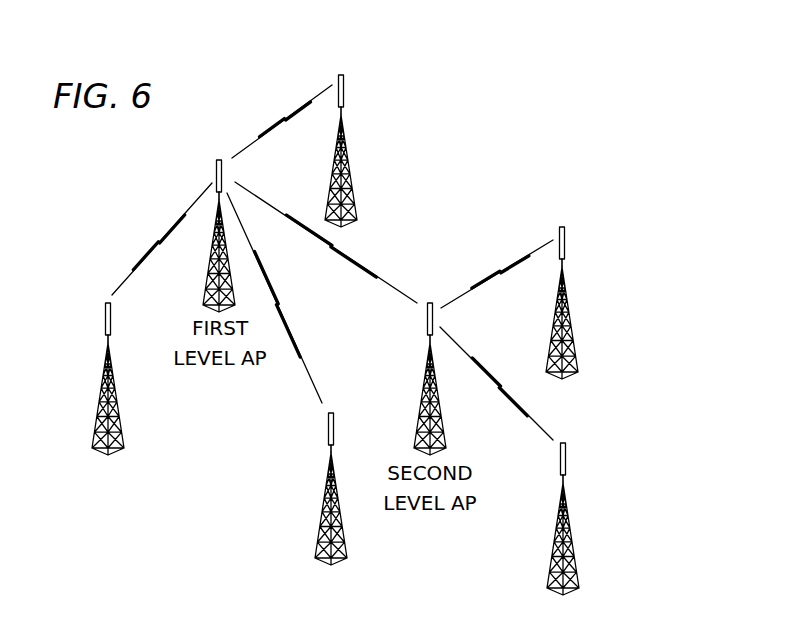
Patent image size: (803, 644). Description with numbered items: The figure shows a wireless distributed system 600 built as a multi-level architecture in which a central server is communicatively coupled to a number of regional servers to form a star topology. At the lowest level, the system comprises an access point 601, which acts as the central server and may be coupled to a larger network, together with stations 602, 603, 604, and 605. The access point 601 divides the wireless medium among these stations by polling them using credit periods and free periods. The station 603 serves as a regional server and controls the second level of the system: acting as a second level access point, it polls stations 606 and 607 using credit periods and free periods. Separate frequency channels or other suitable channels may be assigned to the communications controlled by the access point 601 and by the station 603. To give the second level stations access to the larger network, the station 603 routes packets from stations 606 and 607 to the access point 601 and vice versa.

The wireless distributed system 600 is at (503, 150).
The access point 601 is at (214, 172).
The station 602 is at (344, 95).
The station 603 is at (426, 317).
The station 604 is at (328, 430).
The station 605 is at (105, 318).
The station 606 is at (565, 243).
The station 607 is at (566, 461).